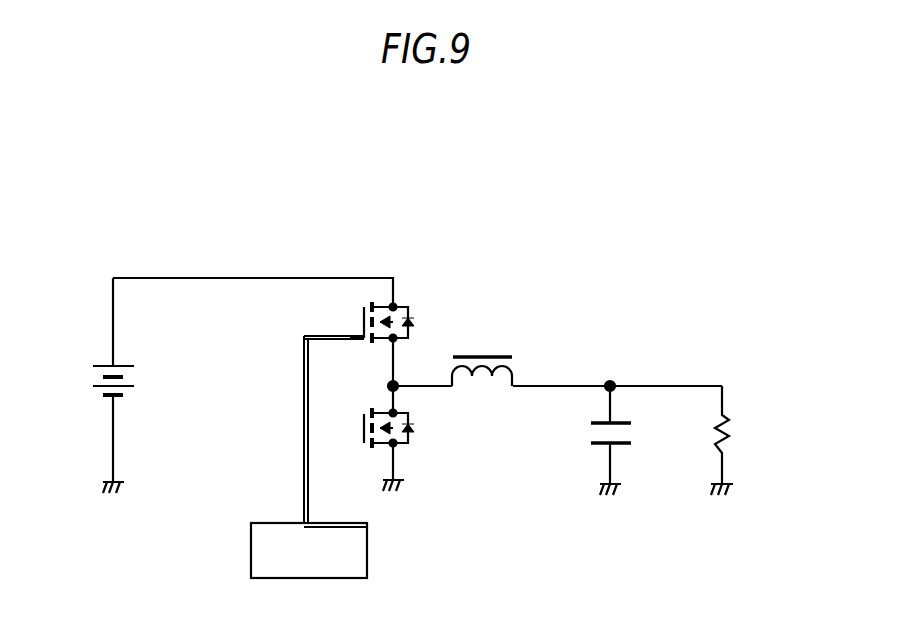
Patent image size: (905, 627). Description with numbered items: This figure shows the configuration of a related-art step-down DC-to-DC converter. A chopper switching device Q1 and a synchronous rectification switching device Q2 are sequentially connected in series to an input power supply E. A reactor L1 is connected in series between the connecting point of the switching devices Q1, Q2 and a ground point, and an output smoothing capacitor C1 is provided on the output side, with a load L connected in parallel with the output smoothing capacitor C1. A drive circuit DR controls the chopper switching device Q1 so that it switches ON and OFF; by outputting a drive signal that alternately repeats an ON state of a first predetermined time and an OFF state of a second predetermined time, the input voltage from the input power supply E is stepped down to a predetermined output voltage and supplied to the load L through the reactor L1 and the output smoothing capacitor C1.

The input power supply E is at (85, 382).
The chopper switching device Q1 is at (402, 302).
The synchronous rectification switching device Q2 is at (425, 435).
The reactor L1 is at (495, 345).
The output smoothing capacitor C1 is at (640, 452).
The load L is at (733, 428).
The drive circuit DR is at (368, 542).